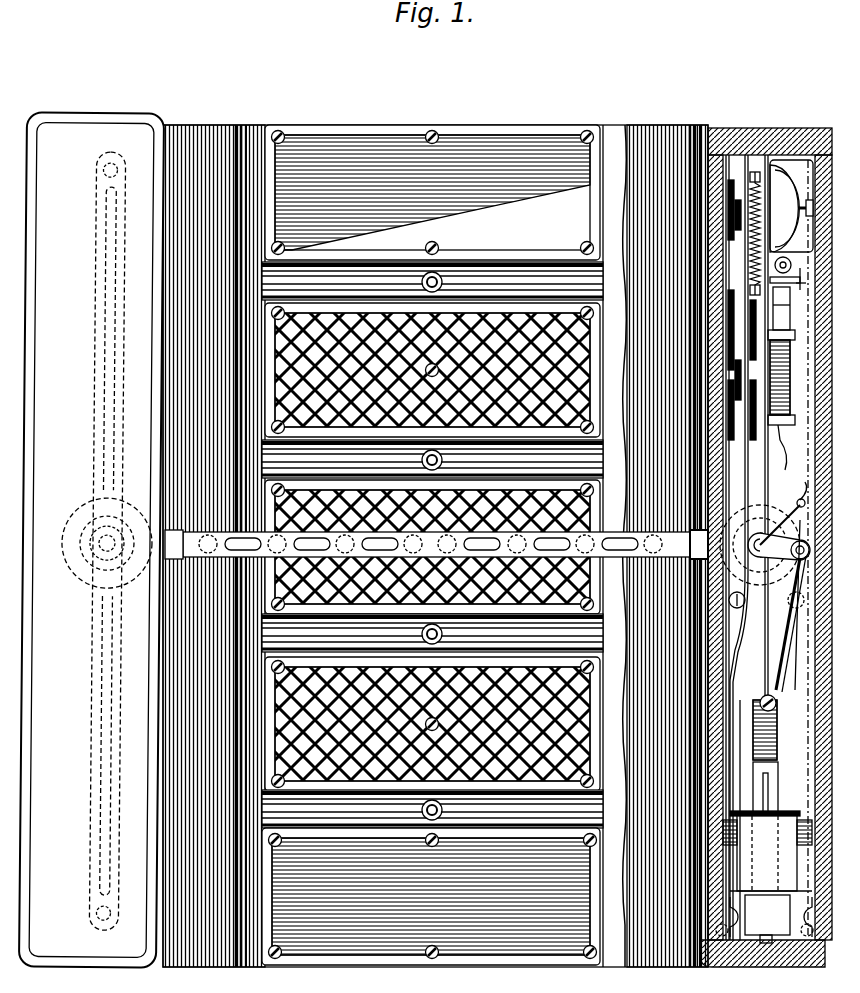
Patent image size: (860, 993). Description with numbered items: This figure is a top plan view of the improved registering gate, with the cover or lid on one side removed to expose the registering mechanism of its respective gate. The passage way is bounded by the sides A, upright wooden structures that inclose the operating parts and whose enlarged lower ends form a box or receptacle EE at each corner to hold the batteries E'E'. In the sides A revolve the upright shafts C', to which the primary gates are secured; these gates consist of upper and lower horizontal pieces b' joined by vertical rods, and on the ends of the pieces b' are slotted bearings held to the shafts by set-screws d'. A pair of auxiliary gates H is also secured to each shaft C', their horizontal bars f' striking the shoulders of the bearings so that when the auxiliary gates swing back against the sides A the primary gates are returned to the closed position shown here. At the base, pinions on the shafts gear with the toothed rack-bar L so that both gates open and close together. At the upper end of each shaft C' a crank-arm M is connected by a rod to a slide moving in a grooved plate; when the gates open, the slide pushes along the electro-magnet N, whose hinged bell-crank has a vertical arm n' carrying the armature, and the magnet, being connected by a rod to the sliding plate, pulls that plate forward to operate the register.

The sides of the gate or passage way A is at (471, 530).
The auxiliary gates H is at (91, 539).
The horizontal bars of the auxiliary gates f' is at (106, 541).
The batteries E'E' is at (445, 301).
The box or receptacle EE is at (590, 705).
The horizontal pieces of the primary gates b' is at (436, 544).
The rack-bar L is at (791, 216).
The bell hammer l is at (787, 369).
The shoulder m is at (763, 466).
The crank-arm M is at (765, 556).
The shafts C' is at (783, 513).
The set-screws d' is at (792, 640).
The vertical arm of the bell-crank n' is at (767, 787).
The electro-magnet N is at (764, 549).